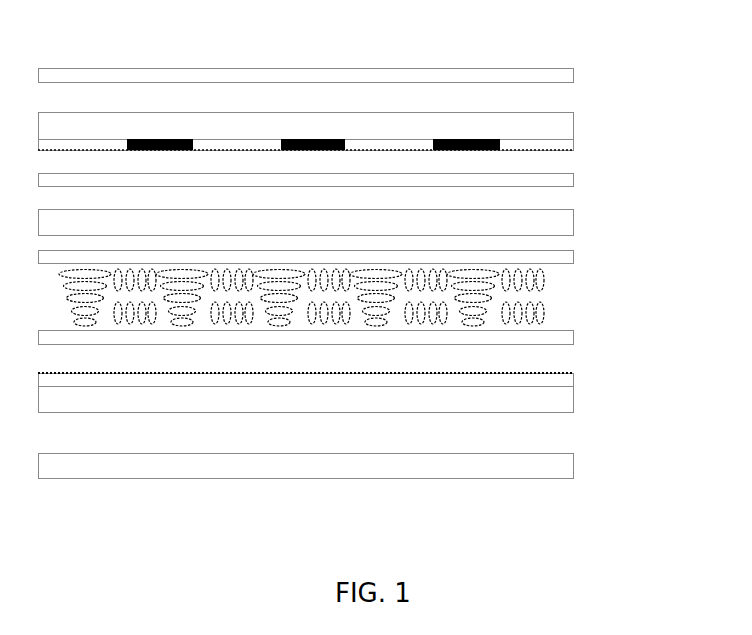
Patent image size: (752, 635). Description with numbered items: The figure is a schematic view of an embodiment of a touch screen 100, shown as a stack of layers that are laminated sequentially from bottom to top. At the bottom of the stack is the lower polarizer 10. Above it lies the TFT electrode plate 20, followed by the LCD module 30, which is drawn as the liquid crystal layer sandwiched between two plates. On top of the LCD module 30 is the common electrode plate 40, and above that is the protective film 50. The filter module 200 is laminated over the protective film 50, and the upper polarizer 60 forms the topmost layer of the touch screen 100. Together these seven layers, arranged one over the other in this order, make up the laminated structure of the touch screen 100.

The touch screen 100 is at (376, 35).
The upper polarizer 60 is at (573, 81).
The filter module 200 is at (573, 127).
The protective film 50 is at (573, 185).
The common electrode plate 40 is at (573, 223).
The LCD module 30 is at (577, 263).
The TFT electrode plate 20 is at (573, 397).
The lower polarizer 10 is at (573, 473).